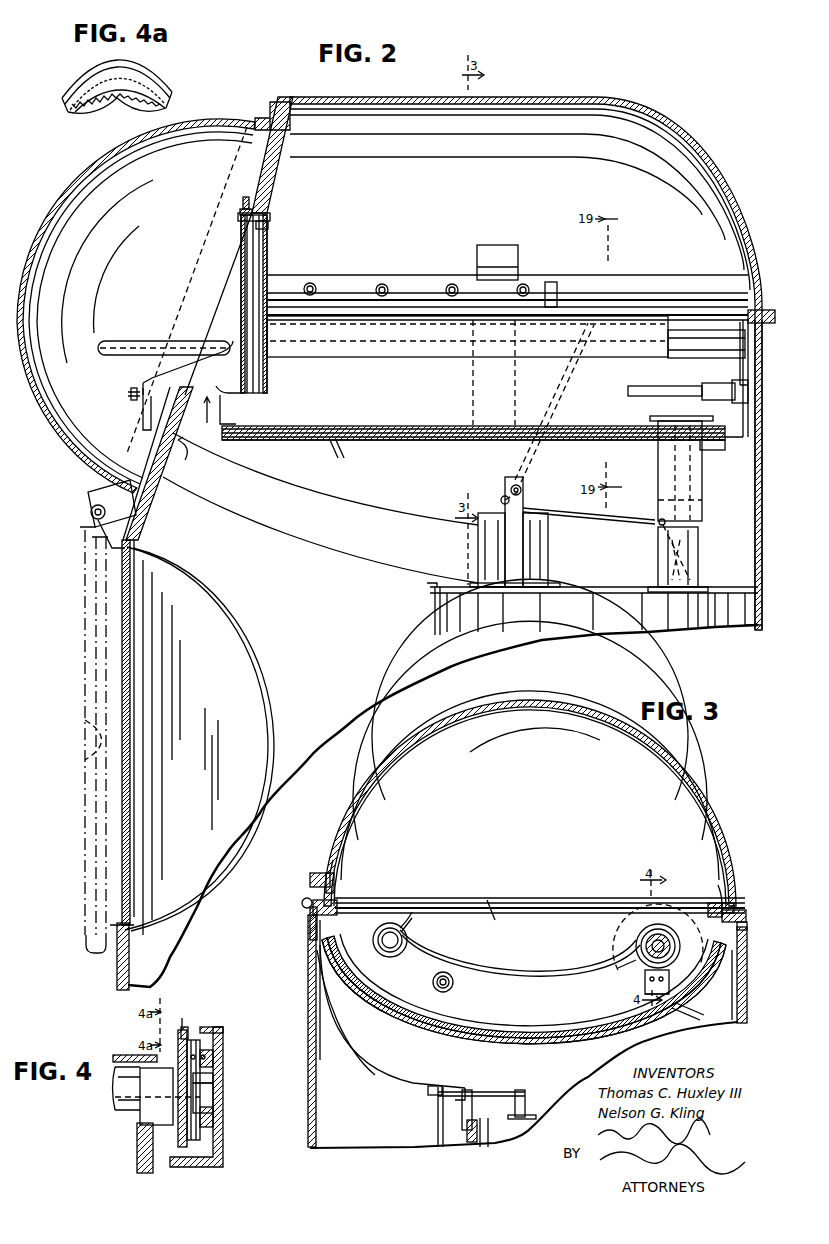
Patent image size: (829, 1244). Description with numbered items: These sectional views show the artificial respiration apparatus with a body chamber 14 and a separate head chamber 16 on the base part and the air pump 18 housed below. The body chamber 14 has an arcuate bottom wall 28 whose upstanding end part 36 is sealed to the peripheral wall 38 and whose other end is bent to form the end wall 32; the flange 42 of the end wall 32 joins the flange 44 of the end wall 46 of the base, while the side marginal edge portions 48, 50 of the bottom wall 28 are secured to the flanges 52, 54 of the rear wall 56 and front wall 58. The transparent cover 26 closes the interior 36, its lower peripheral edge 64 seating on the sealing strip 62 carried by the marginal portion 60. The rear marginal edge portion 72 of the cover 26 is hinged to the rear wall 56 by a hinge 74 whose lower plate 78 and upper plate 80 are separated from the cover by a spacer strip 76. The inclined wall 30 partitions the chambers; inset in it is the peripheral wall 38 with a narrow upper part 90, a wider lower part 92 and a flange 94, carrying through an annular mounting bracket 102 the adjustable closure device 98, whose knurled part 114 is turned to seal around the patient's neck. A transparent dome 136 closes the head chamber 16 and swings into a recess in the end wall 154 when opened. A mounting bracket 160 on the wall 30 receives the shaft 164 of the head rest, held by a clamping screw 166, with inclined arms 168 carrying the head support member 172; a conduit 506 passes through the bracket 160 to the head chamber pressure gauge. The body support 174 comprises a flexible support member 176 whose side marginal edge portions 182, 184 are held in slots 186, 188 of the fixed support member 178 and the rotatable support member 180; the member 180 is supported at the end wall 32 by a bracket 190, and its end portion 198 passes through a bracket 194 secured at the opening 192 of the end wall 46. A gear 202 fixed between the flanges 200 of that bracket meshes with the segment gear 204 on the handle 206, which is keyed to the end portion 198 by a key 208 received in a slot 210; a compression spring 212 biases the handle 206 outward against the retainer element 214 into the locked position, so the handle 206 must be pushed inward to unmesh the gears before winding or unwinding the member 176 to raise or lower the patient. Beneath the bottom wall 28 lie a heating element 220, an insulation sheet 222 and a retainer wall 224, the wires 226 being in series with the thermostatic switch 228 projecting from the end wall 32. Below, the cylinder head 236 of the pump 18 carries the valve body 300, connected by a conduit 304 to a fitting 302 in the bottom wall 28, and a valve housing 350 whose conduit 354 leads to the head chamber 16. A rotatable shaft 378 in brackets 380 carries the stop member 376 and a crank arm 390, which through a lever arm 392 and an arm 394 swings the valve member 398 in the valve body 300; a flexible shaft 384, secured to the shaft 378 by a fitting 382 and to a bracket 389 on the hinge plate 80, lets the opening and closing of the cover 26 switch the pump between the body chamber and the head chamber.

In FIG. 2, the body chamber 14 is at (603, 93).
In FIG. 3, the body chamber 14 is at (710, 801).
In FIG. 2, the head chamber 16 is at (53, 192).
In FIG. 2, the air pump 18 is at (425, 634).
In FIG. 2, the openable top cover 26 is at (642, 118).
In FIG. 3, the openable top cover 26 is at (578, 702).
In FIG. 2, the bottom wall 28 is at (408, 426).
In FIG. 3, the bottom wall 28 is at (527, 1032).
In FIG. 2, the end wall 30 is at (278, 160).
In FIG. 2, the end wall 32 is at (743, 412).
In FIG. 3, the end wall 32 is at (518, 993).
In FIG. 2, the interior of the body chamber 36 is at (530, 140).
In FIG. 3, the interior of the body chamber 36 is at (650, 795).
In FIG. 2, the peripheral wall 38 is at (206, 418).
In FIG. 2, the upper laterally projecting flange 42 is at (745, 313).
In FIG. 2, the inwardly projecting flange 44 is at (740, 366).
In FIG. 2, the end wall of the base part 46 is at (754, 498).
In FIG. 4, the end wall of the base part 46 is at (137, 1168).
In FIG. 3, the side marginal edge portion 48 is at (345, 900).
In FIG. 3, the side marginal edge portion 50 is at (745, 912).
In FIG. 3, the flange of the rear wall 52 is at (337, 912).
In FIG. 3, the flange of the front wall 54 is at (732, 930).
In FIG. 3, the rear wall 56 is at (308, 952).
In FIG. 3, the front wall 58 is at (747, 976).
In FIG. 3, the peripherally extending marginal portion 60 is at (735, 903).
In FIG. 3, the sealing strip 62 is at (712, 903).
In FIG. 2, the lower peripheral edge of the cover 64 is at (762, 305).
In FIG. 3, the lower peripheral edge of the cover 64 is at (718, 885).
In FIG. 3, the rear side marginal edge portion 72 is at (334, 880).
In FIG. 2, the hinge 74 is at (375, 276).
In FIG. 3, the hinge 74 is at (303, 900).
In FIG. 3, the spacer strip 76 is at (328, 872).
In FIG. 3, the lower plate of the hinge 78 is at (310, 920).
In FIG. 3, the upper plate of the hinge 80 is at (312, 874).
In FIG. 2, the upper part of the peripheral wall 90 is at (262, 212).
In FIG. 2, the lower part of the peripheral wall 92 is at (268, 390).
In FIG. 2, the peripherally extending flange 94 is at (243, 200).
In FIG. 2, the adjustable closure device 98 is at (234, 258).
In FIG. 2, the annular mounting bracket 102 is at (270, 221).
In FIG. 2, the annular knurled part 114 is at (240, 220).
In FIG. 2, the dome 136 is at (92, 146).
In FIG. 2, the end wall of the base part 154 is at (233, 620).
In FIG. 2, the mounting bracket 160 is at (150, 435).
In FIG. 2, the depending shaft 164 is at (143, 416).
In FIG. 2, the clamping screw 166 is at (131, 392).
In FIG. 2, the inclined arms 168 is at (165, 373).
In FIG. 2, the head support member 172 is at (98, 349).
In FIG. 3, the body support 174 is at (492, 930).
In FIG. 2, the flexible support member 176 is at (405, 360).
In FIG. 3, the flexible support member 176 is at (514, 960).
In FIG. 2, the support member 178 is at (706, 351).
In FIG. 3, the support member 178 is at (394, 950).
In FIG. 3, the rotatable support member 180 is at (636, 955).
In FIG. 4, the rotatable support member 180 is at (140, 1112).
In FIG. 3, the side marginal edge portion 182 is at (384, 952).
In FIG. 3, the side marginal edge portion 184 is at (645, 980).
In FIG. 3, the longitudinally extending slot 186 is at (408, 923).
In FIG. 3, the longitudinally extending slot 188 is at (618, 975).
In FIG. 3, the bracket 190 is at (645, 992).
In FIG. 4, the opening 192 is at (145, 1122).
In FIG. 4, the bracket 194 is at (113, 1080).
In FIG. 4, the end portion 198 is at (140, 1116).
In FIG. 4, the flanges 200 is at (183, 1027).
In FIG. 4A, the flanges 200 is at (86, 110).
In FIG. 4, the gear 202 is at (188, 1030).
In FIG. 4A, the gear 202 is at (168, 96).
In FIG. 4, the segment gear 204 is at (182, 1030).
In FIG. 4A, the segment gear 204 is at (68, 98).
In FIG. 4, the handle 206 is at (223, 1030).
In FIG. 4A, the handle 206 is at (70, 112).
In FIG. 4, the key 208 is at (213, 1090).
In FIG. 4, the slot 210 is at (213, 1076).
In FIG. 4, the compression spring 212 is at (213, 1052).
In FIG. 4, the retainer element 214 is at (223, 1118).
In FIG. 2, the heating element 220 is at (436, 440).
In FIG. 3, the heating element 220 is at (468, 1030).
In FIG. 2, the sheet of insulation material 222 is at (482, 440).
In FIG. 3, the sheet of insulation material 222 is at (415, 1020).
In FIG. 2, the retainer wall 224 is at (385, 442).
In FIG. 3, the retainer wall 224 is at (520, 1043).
In FIG. 2, the wires 226 is at (330, 450).
In FIG. 3, the wires 226 is at (700, 1012).
In FIG. 2, the thermostatic switch 228 is at (636, 387).
In FIG. 2, the cylinder head 236 is at (427, 584).
In FIG. 2, the valve body 300 is at (698, 540).
In FIG. 2, the fitting 302 is at (650, 440).
In FIG. 2, the conduit 304 is at (658, 492).
In FIG. 2, the valve housing 350 is at (558, 562).
In FIG. 3, the valve housing 350 is at (494, 1144).
In FIG. 2, the conduit 354 is at (307, 540).
In FIG. 3, the stop member 376 is at (515, 1103).
In FIG. 2, the rotatable shaft 378 is at (505, 485).
In FIG. 3, the rotatable shaft 378 is at (472, 1092).
In FIG. 2, the brackets 380 is at (522, 490).
In FIG. 3, the fitting 382 is at (440, 1093).
In FIG. 2, the flexible shaft 384 is at (535, 458).
In FIG. 3, the flexible shaft 384 is at (377, 1065).
In FIG. 2, the bracket 389 is at (545, 283).
In FIG. 2, the crank arm 390 is at (503, 497).
In FIG. 3, the crank arm 390 is at (446, 1090).
In FIG. 2, the lever arm 392 is at (586, 516).
In FIG. 2, the arm 394 is at (660, 538).
In FIG. 2, the valve member 398 is at (672, 562).
In FIG. 2, the conduit 506 is at (183, 462).